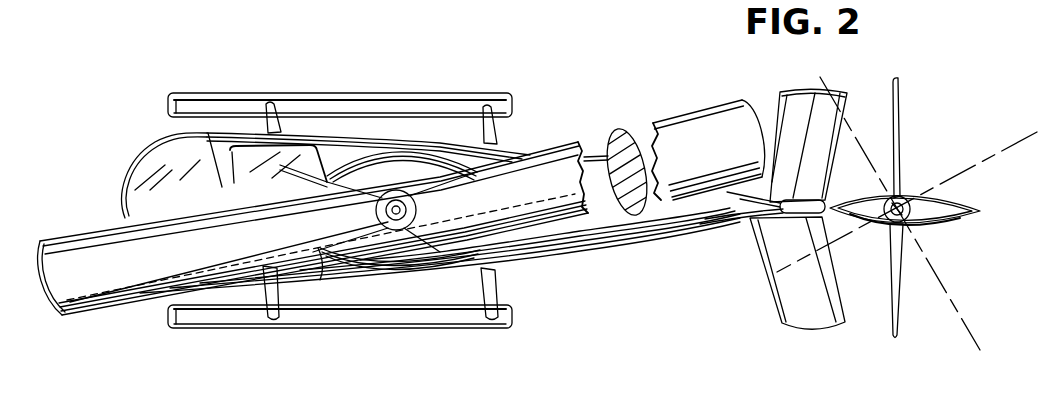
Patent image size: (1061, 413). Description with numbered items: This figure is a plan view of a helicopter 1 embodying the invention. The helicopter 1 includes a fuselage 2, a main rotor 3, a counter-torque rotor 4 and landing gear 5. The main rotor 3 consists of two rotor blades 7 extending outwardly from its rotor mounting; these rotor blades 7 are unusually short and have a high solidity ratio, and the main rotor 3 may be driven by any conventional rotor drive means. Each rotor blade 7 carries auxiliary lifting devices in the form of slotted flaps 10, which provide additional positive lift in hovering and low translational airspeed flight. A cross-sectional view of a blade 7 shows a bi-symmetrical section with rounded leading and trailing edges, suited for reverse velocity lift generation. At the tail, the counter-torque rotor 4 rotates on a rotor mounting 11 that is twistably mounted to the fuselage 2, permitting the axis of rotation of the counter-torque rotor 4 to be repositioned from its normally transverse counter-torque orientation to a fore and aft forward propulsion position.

The helicopter 1 is at (128, 166).
The fuselage 2 is at (610, 240).
The main rotor 3 is at (416, 207).
The counter-torque rotor 4 is at (897, 118).
The landing gear 5 is at (463, 100).
The rotor blades 7 is at (120, 300).
The slotted flaps 10 is at (85, 242).
The rotor mounting 11 is at (956, 222).